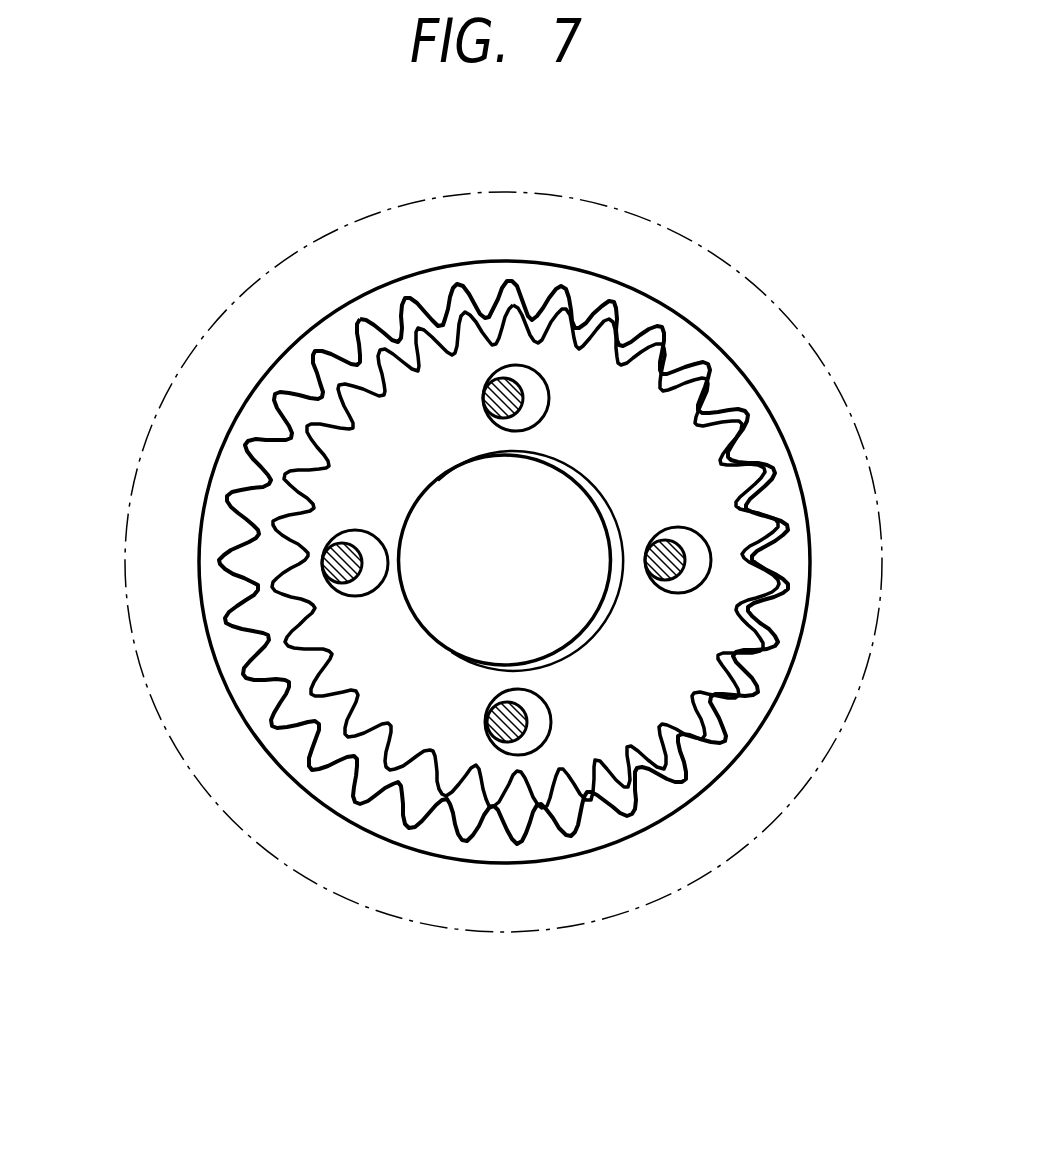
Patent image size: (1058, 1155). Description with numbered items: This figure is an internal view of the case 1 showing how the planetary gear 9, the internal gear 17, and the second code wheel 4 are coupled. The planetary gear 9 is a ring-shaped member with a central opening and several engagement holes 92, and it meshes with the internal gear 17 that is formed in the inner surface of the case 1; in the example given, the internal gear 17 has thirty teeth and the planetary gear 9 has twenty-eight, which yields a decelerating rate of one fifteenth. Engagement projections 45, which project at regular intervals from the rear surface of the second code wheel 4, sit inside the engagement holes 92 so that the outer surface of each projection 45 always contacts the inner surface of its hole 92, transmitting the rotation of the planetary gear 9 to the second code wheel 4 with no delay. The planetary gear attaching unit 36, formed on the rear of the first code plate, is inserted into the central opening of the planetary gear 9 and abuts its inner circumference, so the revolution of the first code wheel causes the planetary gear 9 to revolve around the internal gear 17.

The case 1 is at (382, 313).
The second code wheel 4 is at (185, 380).
The planetary gear 9 is at (598, 360).
The internal gear 17 is at (282, 347).
The planetary gear attaching unit 36 is at (470, 505).
The engagement projections 45 is at (490, 393).
The engagement holes 92 is at (532, 368).